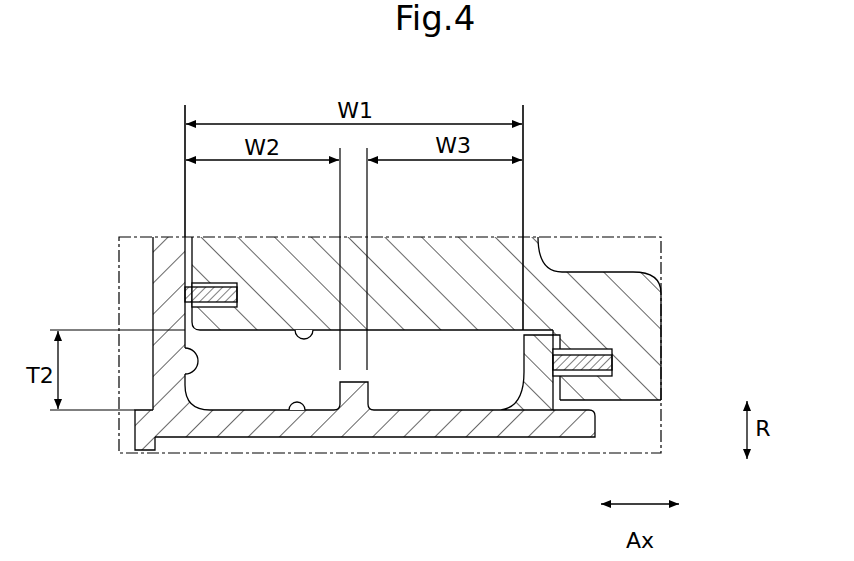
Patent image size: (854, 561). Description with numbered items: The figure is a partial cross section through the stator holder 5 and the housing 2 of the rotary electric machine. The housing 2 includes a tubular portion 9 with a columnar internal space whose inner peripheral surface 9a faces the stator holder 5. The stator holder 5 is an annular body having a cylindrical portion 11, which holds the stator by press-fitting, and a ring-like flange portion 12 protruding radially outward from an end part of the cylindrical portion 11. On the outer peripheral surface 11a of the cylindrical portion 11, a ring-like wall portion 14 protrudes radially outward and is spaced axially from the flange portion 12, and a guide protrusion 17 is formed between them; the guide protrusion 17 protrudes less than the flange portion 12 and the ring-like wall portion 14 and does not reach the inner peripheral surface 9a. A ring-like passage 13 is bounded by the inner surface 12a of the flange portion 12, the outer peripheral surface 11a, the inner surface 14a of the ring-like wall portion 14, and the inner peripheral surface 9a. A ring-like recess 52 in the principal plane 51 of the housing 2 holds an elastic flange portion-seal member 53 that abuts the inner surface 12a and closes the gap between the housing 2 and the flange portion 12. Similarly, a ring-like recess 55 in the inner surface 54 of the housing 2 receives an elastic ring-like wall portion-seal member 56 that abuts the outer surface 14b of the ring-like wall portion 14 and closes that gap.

The housing 2 is at (453, 267).
The stator holder 5 is at (136, 424).
The tubular portion 9 is at (270, 258).
The inner peripheral surface 9a is at (311, 325).
The cylindrical portion 11 is at (252, 430).
The outer peripheral surface 11a is at (302, 418).
The flange portion 12 is at (168, 247).
The inner surface 12a is at (185, 350).
The ring-like passage 13 is at (388, 388).
The ring-like wall portion 14 is at (538, 340).
The inner surface 14a is at (499, 376).
The outer surface 14b is at (600, 400).
The guide protrusion 17 is at (352, 380).
The principal plane 51 is at (190, 265).
The ring-like recess 52 is at (221, 290).
The flange portion-seal member 53 is at (198, 300).
The inner surface 54 is at (553, 388).
The ring-like recess 55 is at (596, 350).
The ring-like wall portion-seal member 56 is at (612, 364).